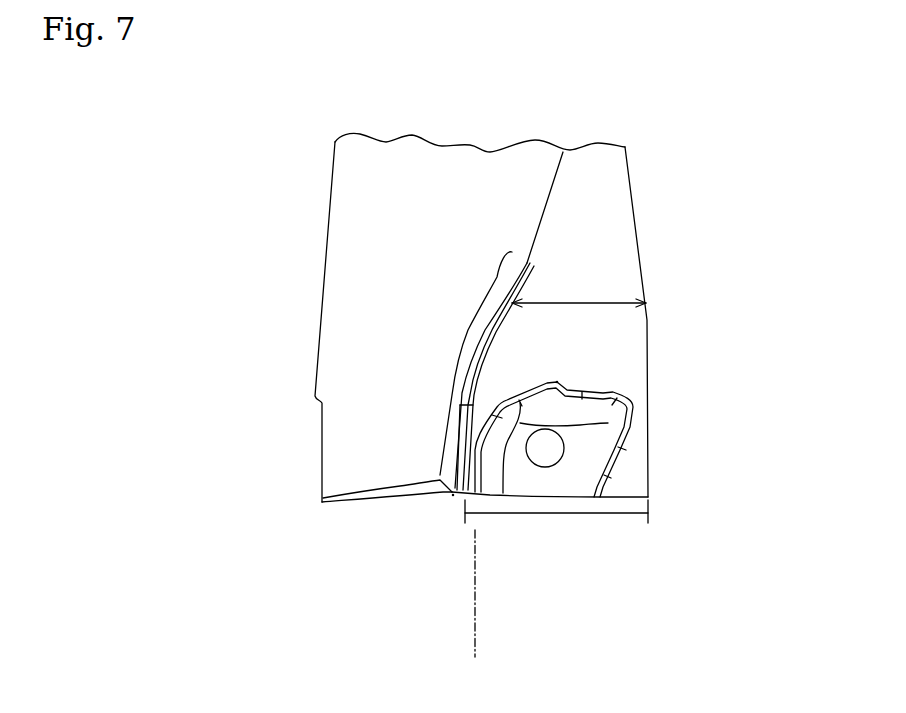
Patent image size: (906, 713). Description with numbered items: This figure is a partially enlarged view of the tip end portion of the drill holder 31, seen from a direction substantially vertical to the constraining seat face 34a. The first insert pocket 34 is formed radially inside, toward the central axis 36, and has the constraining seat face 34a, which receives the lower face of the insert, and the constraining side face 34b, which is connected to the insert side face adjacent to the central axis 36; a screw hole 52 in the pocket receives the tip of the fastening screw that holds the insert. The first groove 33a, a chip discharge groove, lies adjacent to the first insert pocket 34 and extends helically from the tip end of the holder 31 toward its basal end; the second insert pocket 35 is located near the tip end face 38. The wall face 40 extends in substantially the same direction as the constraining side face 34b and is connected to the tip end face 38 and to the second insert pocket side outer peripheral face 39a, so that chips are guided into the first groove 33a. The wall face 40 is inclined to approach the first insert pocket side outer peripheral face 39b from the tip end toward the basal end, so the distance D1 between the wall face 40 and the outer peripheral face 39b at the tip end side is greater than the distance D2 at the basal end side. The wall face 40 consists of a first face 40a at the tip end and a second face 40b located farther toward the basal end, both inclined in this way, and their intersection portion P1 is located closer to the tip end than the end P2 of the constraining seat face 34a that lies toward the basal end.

The holder 31 is at (321, 198).
The first groove 33a is at (597, 222).
The first insert pocket 34 is at (611, 439).
The constraining seat face 34a is at (583, 448).
The constraining side face 34b is at (632, 420).
The second insert pocket 35 is at (393, 497).
The central axis 36 is at (478, 620).
The tip end face 38 is at (362, 502).
The second insert pocket side outer peripheral face 39a is at (357, 310).
The first insert pocket side outer peripheral face 39b is at (648, 325).
The wall face 40 is at (439, 371).
The first face 40a is at (398, 332).
The second face 40b is at (434, 401).
The screw hole 52 is at (607, 487).
The intersection portion P1 is at (453, 497).
The end P2 is at (557, 380).
The distance on tip end side D1 is at (556, 521).
The distance on basal end side D2 is at (579, 293).